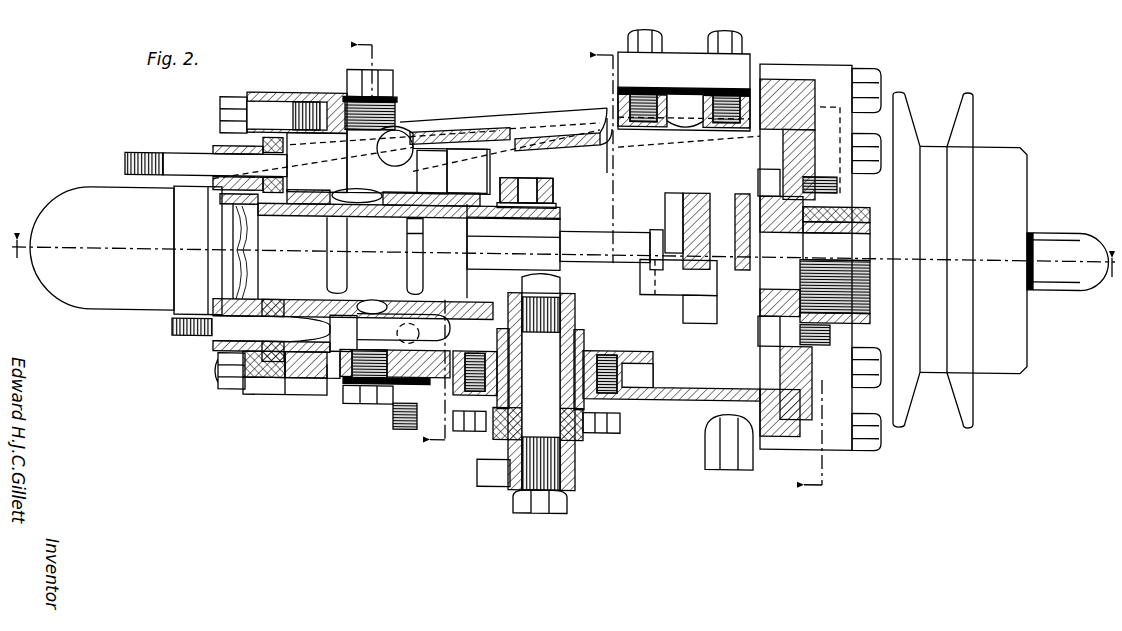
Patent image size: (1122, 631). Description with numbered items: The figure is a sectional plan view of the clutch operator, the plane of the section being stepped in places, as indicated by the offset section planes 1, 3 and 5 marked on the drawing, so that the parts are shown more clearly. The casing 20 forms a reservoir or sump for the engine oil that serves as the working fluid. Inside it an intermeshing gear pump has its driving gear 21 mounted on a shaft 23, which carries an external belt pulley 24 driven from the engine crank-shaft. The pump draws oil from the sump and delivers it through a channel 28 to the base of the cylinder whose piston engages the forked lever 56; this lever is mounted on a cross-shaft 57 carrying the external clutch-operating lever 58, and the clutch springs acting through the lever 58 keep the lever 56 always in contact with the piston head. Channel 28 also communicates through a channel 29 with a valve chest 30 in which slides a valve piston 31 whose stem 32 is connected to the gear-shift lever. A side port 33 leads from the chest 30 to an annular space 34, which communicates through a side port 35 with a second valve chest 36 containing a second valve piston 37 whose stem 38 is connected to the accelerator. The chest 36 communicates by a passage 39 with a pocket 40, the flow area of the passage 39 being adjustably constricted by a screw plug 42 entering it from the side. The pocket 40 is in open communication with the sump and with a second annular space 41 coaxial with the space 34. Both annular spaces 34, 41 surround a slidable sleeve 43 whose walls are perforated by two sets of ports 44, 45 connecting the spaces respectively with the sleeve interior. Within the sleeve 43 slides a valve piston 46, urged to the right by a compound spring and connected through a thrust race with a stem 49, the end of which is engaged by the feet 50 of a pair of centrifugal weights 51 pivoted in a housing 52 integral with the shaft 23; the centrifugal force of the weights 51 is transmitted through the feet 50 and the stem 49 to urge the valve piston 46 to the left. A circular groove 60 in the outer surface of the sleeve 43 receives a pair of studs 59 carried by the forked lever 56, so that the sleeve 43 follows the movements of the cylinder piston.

The section line 1- 1 is at (561, 249).
The section line 3- 3 is at (710, 274).
The section line 5- 5 is at (403, 249).
The casing 20 is at (668, 390).
The driving gear 21 is at (837, 286).
The shaft 23 is at (805, 250).
The belt pulley 24 is at (968, 84).
The channel 28 is at (463, 131).
The channel 29 is at (402, 136).
The valve chest 30 is at (357, 152).
The valve piston 31 is at (312, 150).
The stem 32 is at (147, 151).
The side port 33 is at (333, 212).
The annular space 34 is at (330, 200).
The side port 35 is at (310, 356).
The valve chest 36 is at (270, 370).
The second valve piston 37 is at (337, 362).
The stem 38 is at (178, 325).
The passage 39 is at (410, 338).
The pocket 40 is at (500, 326).
The second annular space 41 is at (332, 214).
The screw plug 42 is at (410, 420).
The slidable sleeve 43 is at (253, 258).
The ports 44 is at (252, 238).
The ports 45 is at (408, 262).
The valve piston 46 is at (513, 243).
The stem 49 is at (633, 242).
The feet 50 is at (678, 219).
The centrifugal weights 51 is at (700, 219).
The housing 52 is at (748, 182).
The forked lever 56 is at (553, 186).
The cross-shaft 57 is at (542, 420).
The clutch-operating lever 58 is at (500, 468).
The studs 59 is at (528, 178).
The circular groove 60 is at (556, 211).